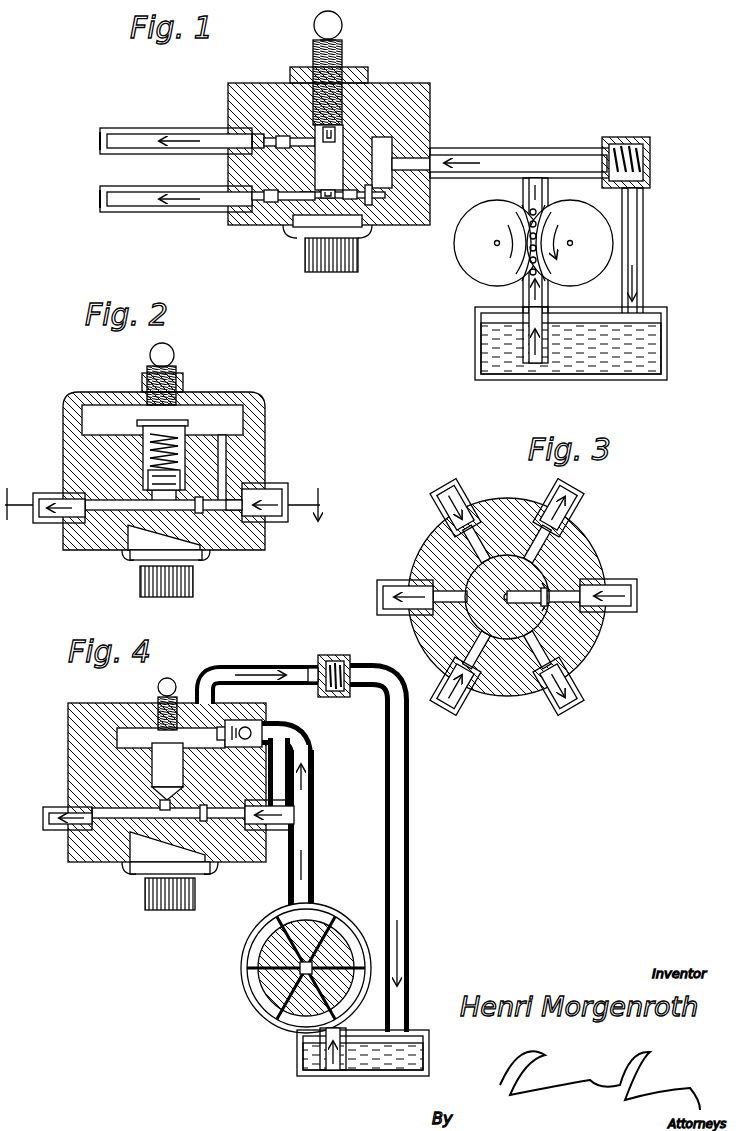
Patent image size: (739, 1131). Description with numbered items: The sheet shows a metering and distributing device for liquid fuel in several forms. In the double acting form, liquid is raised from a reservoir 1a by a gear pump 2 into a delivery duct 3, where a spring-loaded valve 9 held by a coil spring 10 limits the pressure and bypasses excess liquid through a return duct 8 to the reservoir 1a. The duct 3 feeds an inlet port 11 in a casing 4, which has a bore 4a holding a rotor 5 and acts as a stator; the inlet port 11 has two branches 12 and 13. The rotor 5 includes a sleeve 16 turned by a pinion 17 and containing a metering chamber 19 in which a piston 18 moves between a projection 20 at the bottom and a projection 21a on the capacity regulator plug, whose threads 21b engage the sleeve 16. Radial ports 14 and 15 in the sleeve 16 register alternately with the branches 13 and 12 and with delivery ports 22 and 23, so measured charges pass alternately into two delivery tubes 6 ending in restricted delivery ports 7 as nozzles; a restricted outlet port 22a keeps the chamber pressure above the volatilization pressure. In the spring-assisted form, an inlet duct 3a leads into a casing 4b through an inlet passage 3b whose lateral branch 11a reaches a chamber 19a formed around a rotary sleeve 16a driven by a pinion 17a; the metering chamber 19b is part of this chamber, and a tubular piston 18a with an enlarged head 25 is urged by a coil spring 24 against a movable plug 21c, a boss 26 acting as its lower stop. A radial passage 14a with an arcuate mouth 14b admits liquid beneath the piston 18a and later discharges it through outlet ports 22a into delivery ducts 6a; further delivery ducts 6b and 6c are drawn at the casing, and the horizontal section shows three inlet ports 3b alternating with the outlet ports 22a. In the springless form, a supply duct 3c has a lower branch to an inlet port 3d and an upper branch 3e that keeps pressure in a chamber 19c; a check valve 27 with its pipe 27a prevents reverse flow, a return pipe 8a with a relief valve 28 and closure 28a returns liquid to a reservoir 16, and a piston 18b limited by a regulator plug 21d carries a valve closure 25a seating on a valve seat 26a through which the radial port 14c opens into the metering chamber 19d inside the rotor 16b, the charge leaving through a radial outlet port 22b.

In FIG. 1, the reservoir 1a is at (652, 340).
In FIG. 1, the pump 2 is at (478, 262).
In FIG. 1, the delivery duct 3 is at (540, 156).
In FIG. 2, the delivery duct 3 is at (167, 497).
In FIG. 2, the inlet duct 3a is at (280, 489).
In FIG. 3, the inlet duct 3a is at (626, 585).
In FIG. 2, the inlet passage 3b is at (250, 540).
In FIG. 3, the inlet passage 3b is at (484, 650).
In FIG. 4, the supply duct 3c is at (314, 770).
In FIG. 4, the inlet port 3d is at (292, 814).
In FIG. 4, the upper branch duct 3e is at (284, 738).
In FIG. 1, the casing 4 is at (432, 84).
In FIG. 1, the bore 4a is at (283, 136).
In FIG. 4, the bore 4a is at (256, 862).
In FIG. 2, the casing 4b is at (265, 425).
In FIG. 1, the rotor 5 is at (343, 64).
In FIG. 1, the delivery tube 6 is at (180, 186).
In FIG. 3, the delivery duct 6a is at (566, 706).
In FIG. 2, the distribution pipe 6b is at (48, 523).
In FIG. 3, the distribution pipe 6c is at (580, 502).
In FIG. 1, the restricted delivery port 7 is at (100, 199).
In FIG. 1, the return duct 8 is at (643, 250).
In FIG. 4, the return pipe 8a is at (250, 665).
In FIG. 1, the spring-loaded valve 9 is at (609, 158).
In FIG. 1, the coil spring 10 is at (650, 158).
In FIG. 1, the inlet port 11 is at (430, 150).
In FIG. 2, the lateral branch 11a is at (226, 470).
In FIG. 1, the branch 12 is at (402, 158).
In FIG. 1, the branch 13 is at (370, 205).
In FIG. 1, the radial port 14 is at (352, 199).
In FIG. 2, the radial passage 14a is at (200, 513).
In FIG. 3, the arcuate mouth 14b is at (548, 612).
In FIG. 3, the radial inlet port 14c is at (522, 600).
In FIG. 4, the radial inlet port 14c is at (204, 822).
In FIG. 1, the radial port 15 is at (306, 68).
In FIG. 1, the sleeve 16 is at (350, 95).
In FIG. 3, the sleeve 16 is at (530, 560).
In FIG. 4, the sleeve 16 is at (420, 1036).
In FIG. 2, the rotary sleeve 16a is at (200, 555).
In FIG. 4, the rotor 16b is at (132, 848).
In FIG. 1, the pinion 17 is at (334, 272).
In FIG. 4, the pinion 17 is at (172, 910).
In FIG. 2, the pinion 17a is at (165, 597).
In FIG. 1, the piston 18 is at (300, 228).
In FIG. 2, the piston 18a is at (196, 405).
In FIG. 4, the piston 18b is at (160, 758).
In FIG. 1, the metering chamber 19 is at (380, 137).
In FIG. 2, the chamber 19a is at (82, 416).
In FIG. 2, the metering chamber 19b is at (140, 501).
In FIG. 4, the chamber 19c is at (130, 728).
In FIG. 4, the metering chamber 19d is at (120, 810).
In FIG. 1, the projection 20 is at (324, 200).
In FIG. 1, the projection 21a is at (332, 142).
In FIG. 1, the threads 21b is at (316, 26).
In FIG. 2, the movable plug 21c is at (146, 374).
In FIG. 4, the regulator plug 21d is at (176, 697).
In FIG. 1, the delivery port 22 is at (268, 202).
In FIG. 2, the outlet port 22a is at (112, 516).
In FIG. 3, the outlet port 22a is at (602, 633).
In FIG. 4, the radial outlet port 22b is at (102, 820).
In FIG. 1, the delivery port 23 is at (258, 134).
In FIG. 2, the coil spring 24 is at (143, 460).
In FIG. 2, the enlarged head 25 is at (140, 420).
In FIG. 4, the valve closure 25a is at (160, 790).
In FIG. 2, the boss 26 is at (185, 438).
In FIG. 4, the valve seat 26a is at (140, 874).
In FIG. 4, the check valve 27 is at (252, 726).
In FIG. 4, the pipe 27a is at (312, 726).
In FIG. 4, the relief valve 28 is at (326, 655).
In FIG. 4, the closure 28a is at (310, 668).